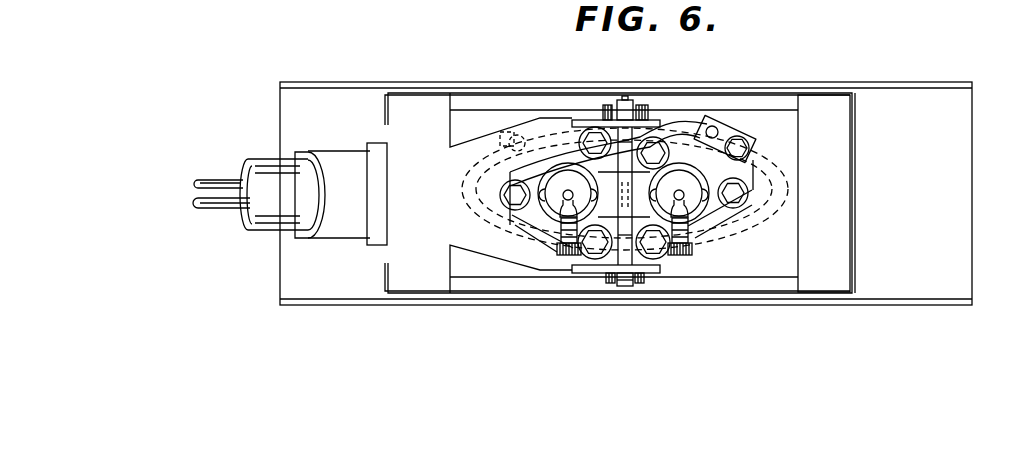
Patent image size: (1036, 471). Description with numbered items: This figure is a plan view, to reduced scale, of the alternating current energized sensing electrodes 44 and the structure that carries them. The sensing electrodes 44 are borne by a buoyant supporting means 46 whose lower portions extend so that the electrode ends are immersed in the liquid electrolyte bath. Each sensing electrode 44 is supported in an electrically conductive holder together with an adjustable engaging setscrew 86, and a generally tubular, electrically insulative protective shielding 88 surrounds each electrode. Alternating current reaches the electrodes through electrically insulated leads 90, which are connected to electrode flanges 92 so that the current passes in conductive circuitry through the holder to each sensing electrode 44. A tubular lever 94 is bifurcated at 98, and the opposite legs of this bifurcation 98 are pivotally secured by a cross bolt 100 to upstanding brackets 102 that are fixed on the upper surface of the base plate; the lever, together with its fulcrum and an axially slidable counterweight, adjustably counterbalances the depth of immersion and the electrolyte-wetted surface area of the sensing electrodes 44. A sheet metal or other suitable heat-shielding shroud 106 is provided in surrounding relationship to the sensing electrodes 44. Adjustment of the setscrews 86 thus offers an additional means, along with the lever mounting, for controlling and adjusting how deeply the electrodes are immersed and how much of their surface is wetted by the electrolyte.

The sensing electrodes 44 is at (563, 195).
The buoyant supporting means 46 is at (972, 177).
The setscrew 86 is at (572, 256).
The protective shielding 88 is at (548, 198).
The electrically insulated leads 90 is at (195, 205).
The electrode flanges 92 is at (495, 170).
The tubular lever 94 is at (263, 230).
The bifurcation 98 is at (653, 118).
The cross bolt 100 is at (622, 286).
The upstanding brackets 102 is at (602, 112).
The heat-shielding shroud 106 is at (857, 172).